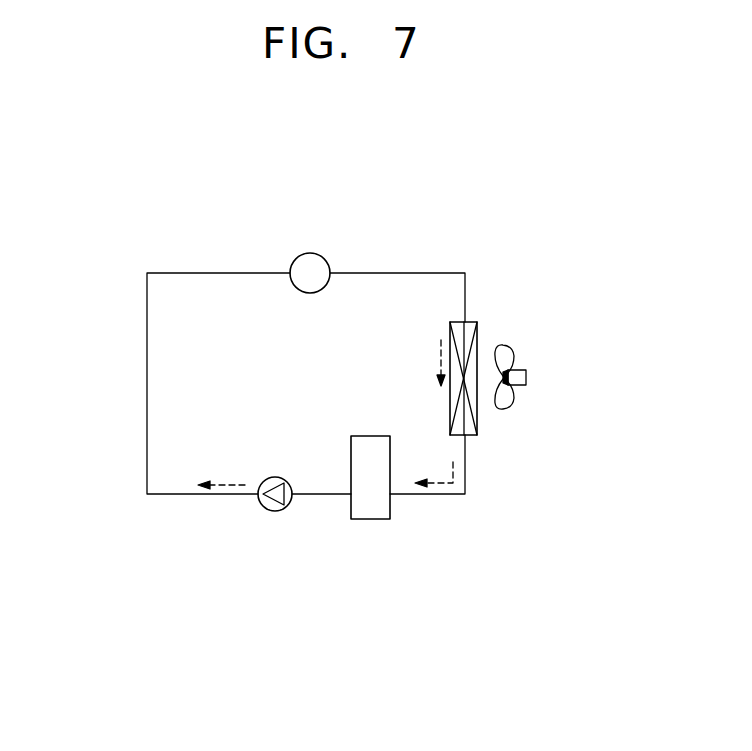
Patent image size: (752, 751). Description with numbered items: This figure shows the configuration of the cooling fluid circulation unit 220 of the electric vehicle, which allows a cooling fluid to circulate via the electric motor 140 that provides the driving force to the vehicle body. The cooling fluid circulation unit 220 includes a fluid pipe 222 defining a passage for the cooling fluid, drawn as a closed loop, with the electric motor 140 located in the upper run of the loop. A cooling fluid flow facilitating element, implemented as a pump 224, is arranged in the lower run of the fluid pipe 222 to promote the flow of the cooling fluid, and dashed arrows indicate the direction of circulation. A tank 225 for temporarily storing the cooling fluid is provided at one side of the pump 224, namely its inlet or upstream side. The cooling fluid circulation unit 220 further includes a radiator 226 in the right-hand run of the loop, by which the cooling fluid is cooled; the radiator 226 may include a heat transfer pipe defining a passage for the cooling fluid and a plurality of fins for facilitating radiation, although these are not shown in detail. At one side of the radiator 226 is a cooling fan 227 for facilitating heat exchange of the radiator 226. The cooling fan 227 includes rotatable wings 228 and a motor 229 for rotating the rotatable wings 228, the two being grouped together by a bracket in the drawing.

The cooling fluid circulation unit 220 is at (162, 217).
The fluid pipe 222 is at (147, 340).
The electric motor 140 is at (310, 253).
The pump 224 is at (270, 511).
The tank 225 is at (377, 519).
The radiator 226 is at (477, 327).
The cooling fan 227 is at (597, 357).
The rotatable wings 228 is at (508, 405).
The motor 229 is at (526, 377).